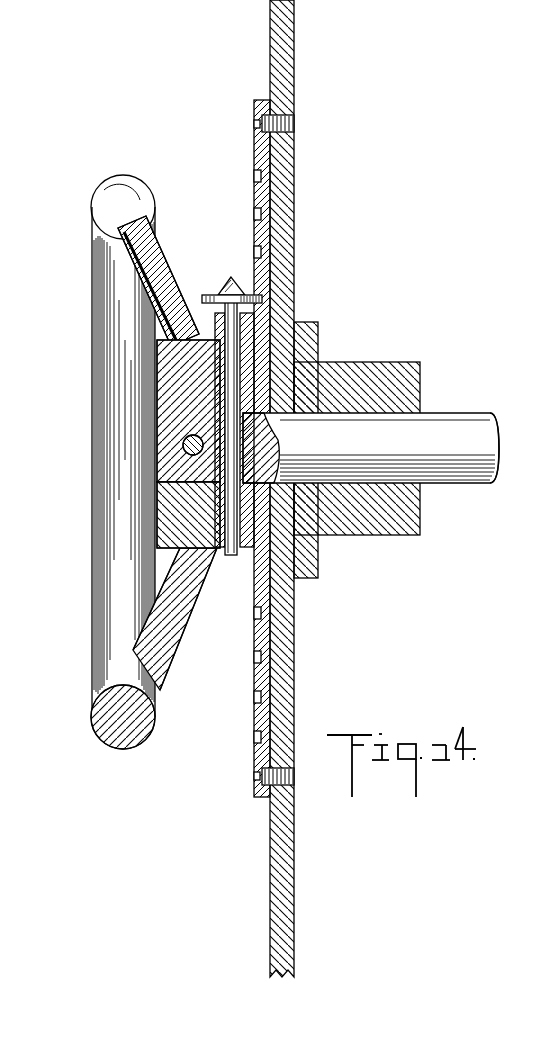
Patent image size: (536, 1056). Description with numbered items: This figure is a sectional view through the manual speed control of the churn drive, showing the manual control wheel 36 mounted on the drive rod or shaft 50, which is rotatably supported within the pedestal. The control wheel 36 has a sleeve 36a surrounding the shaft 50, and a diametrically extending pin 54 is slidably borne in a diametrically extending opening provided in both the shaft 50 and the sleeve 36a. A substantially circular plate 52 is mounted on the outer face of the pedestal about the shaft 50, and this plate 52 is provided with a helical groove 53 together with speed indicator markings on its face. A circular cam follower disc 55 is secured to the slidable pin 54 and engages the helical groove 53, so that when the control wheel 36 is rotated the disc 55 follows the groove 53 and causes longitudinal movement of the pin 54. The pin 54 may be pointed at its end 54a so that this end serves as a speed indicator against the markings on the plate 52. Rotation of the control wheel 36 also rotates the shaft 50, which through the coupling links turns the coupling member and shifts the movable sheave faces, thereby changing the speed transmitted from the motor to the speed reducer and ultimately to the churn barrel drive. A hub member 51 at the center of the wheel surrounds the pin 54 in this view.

The manual control wheel 36 is at (100, 728).
The sleeve of the manual control wheel 36a is at (260, 323).
The drive rod or shaft 50 is at (465, 425).
The hub member 51 is at (183, 446).
The circular plate 52 is at (254, 150).
The helical groove 53 is at (254, 177).
The diametrically extending pin 54 is at (228, 362).
The pointed end of the pin 54a is at (231, 277).
The circular cam follower disc 55 is at (207, 293).